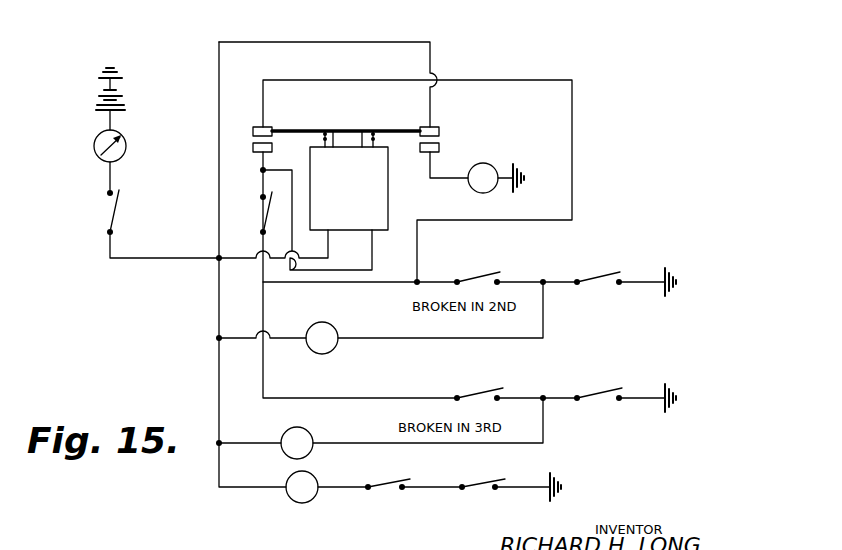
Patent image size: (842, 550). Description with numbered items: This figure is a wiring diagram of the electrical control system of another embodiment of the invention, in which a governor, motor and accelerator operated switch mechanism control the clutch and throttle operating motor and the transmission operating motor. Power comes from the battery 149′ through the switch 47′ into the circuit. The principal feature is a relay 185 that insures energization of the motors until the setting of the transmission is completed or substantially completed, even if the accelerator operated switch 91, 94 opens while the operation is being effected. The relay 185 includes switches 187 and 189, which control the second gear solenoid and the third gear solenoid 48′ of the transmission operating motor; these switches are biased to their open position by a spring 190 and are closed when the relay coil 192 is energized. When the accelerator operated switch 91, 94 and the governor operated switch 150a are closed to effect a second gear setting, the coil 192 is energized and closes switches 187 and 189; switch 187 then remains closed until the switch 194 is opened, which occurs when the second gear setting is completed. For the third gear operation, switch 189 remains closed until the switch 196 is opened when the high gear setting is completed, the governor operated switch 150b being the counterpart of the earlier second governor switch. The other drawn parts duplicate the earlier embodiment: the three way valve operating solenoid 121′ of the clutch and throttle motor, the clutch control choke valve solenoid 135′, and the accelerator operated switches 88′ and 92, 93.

The battery 149′ is at (96, 94).
The switch 47′ is at (112, 208).
The switch 187 is at (252, 137).
The switch 189 is at (438, 138).
The relay 185 is at (325, 128).
The spring 190 is at (373, 133).
The relay coil 192 is at (388, 195).
The three way valve operating solenoid 121′ is at (486, 169).
The accelerator operated switch 91 is at (265, 208).
The accelerator operated switch 94 is at (266, 201).
The switch 194 is at (482, 270).
The switch 196 is at (477, 388).
The governor operated switch 150a is at (602, 263).
The governor operated switch 150b is at (600, 407).
The third gear solenoid 48′ is at (308, 434).
The clutch control choke valve solenoid 135′ is at (297, 502).
The switch 88′ is at (387, 491).
The switch 92 is at (467, 490).
The switch 93 is at (482, 484).